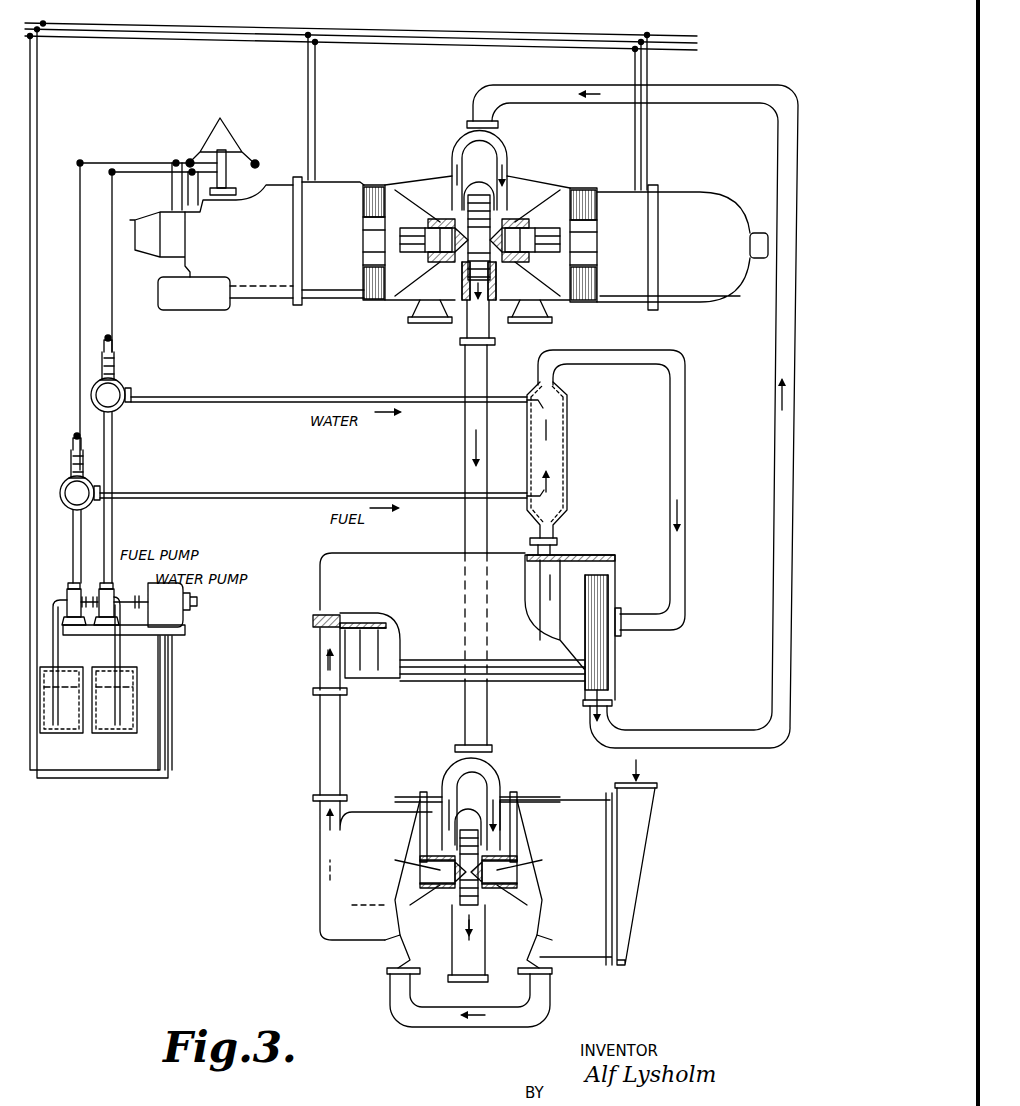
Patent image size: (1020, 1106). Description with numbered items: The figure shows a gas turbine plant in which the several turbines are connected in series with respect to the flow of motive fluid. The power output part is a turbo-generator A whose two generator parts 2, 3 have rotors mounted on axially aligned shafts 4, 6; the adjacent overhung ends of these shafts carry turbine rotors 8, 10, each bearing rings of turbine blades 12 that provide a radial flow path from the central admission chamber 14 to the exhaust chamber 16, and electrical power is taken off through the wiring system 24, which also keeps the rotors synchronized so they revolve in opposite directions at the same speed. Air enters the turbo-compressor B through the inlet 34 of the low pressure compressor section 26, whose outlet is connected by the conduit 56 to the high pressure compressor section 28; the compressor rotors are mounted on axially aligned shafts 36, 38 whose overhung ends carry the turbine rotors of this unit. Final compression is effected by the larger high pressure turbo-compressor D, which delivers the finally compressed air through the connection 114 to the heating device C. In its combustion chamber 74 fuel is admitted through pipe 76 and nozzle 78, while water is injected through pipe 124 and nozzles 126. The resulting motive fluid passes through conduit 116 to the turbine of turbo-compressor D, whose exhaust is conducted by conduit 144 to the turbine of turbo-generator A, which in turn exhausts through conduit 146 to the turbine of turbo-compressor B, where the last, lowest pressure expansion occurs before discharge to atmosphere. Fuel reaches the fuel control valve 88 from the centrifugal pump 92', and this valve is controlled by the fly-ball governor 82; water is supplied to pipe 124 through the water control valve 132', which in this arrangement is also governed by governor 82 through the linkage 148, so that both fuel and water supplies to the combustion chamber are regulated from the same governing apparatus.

The wiring system 24 is at (483, 38).
The fly-ball governor 82 is at (236, 140).
The linkage 148 is at (131, 180).
The generator part 3 is at (372, 184).
The generator part 2 is at (586, 196).
The exhaust chamber 16 is at (479, 183).
The turbine blades 12 is at (492, 190).
The turbo-generator A is at (505, 192).
The shaft 6 is at (412, 232).
The shaft 4 is at (543, 232).
The central admission chamber 14 is at (445, 258).
The turbine rotor 10 is at (462, 296).
The turbine rotor 8 is at (490, 296).
The conduit 146 is at (488, 380).
The water control valve 132' is at (133, 459).
The water pipe 124 is at (273, 405).
The fuel control valve 88 is at (66, 482).
The fuel pipe 76 is at (266, 502).
The centrifugal pump 92' is at (116, 667).
The combustion chamber 74 is at (560, 458).
The water nozzles 126 is at (552, 408).
The fuel nozzle 78 is at (552, 506).
The heating device C is at (527, 450).
The connection 114 is at (556, 540).
The conduit 116 is at (686, 455).
The conduit 144 is at (773, 491).
The high pressure turbo-compressor D is at (402, 566).
The high pressure compressor section 28 is at (372, 812).
The low pressure compressor section 26 is at (574, 802).
The inlet 34 is at (648, 778).
The turbo-compressor B is at (500, 800).
The shaft 38 is at (420, 872).
The shaft 36 is at (517, 872).
The conduit 56 is at (448, 1028).